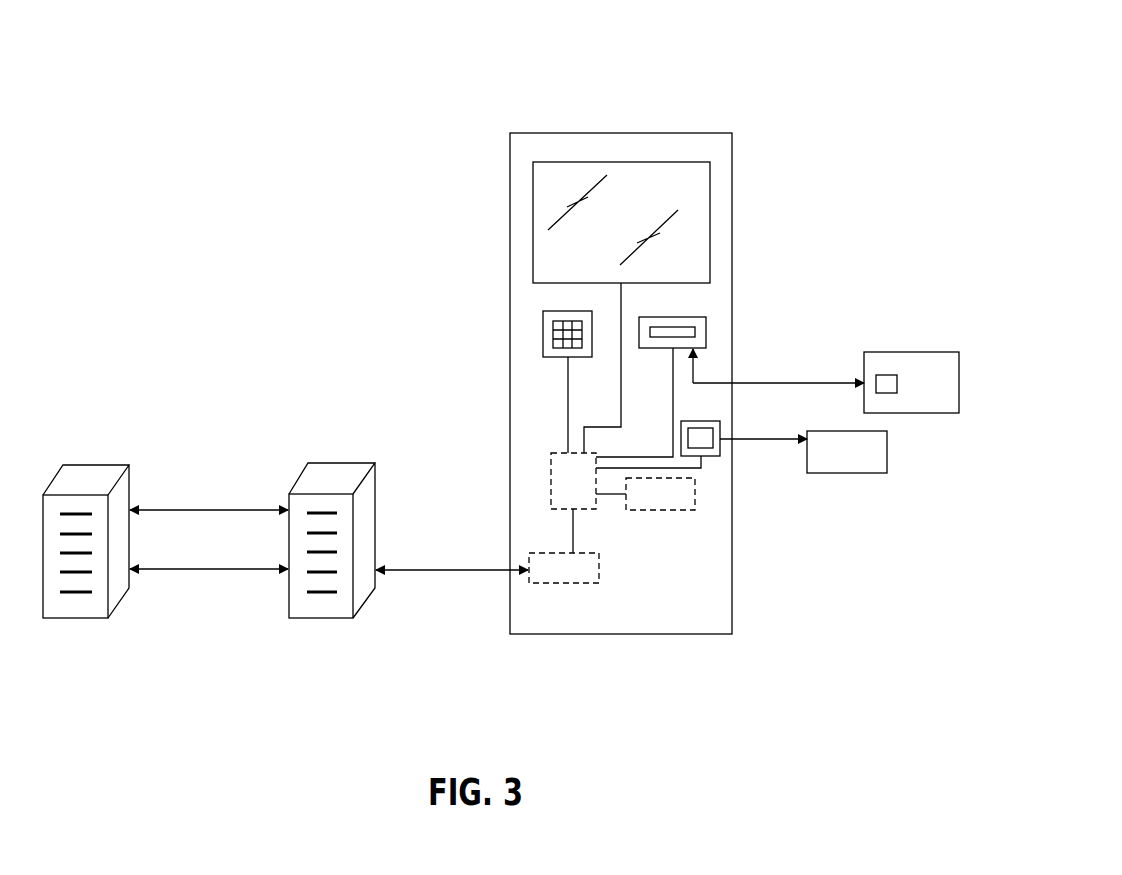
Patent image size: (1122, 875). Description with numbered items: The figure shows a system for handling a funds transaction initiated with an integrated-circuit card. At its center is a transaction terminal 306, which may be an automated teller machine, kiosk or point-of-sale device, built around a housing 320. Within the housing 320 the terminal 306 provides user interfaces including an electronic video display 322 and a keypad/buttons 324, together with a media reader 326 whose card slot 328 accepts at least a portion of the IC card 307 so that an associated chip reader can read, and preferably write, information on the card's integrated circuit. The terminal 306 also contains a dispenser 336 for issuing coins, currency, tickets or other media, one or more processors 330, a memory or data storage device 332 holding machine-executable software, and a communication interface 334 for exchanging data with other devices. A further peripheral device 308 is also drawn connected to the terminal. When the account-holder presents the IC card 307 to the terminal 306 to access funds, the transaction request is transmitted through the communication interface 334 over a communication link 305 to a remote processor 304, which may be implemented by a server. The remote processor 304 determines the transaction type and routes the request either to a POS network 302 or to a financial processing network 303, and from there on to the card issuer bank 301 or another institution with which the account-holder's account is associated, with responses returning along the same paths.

The card issuer bank 301 is at (85, 468).
The POS network 302 is at (197, 507).
The financial processing network 303 is at (200, 572).
The remote processor 304 is at (332, 470).
The communication link 305 is at (430, 567).
The terminal 306 is at (672, 363).
The IC card 307 is at (898, 352).
The peripheral device 308 is at (853, 473).
The housing 320 is at (680, 634).
The electronic video display 322 is at (698, 203).
The keypad/buttons 324 is at (553, 327).
The media reader 326 is at (697, 312).
The card slot 328 is at (695, 332).
The processor 330 is at (543, 468).
The memory or data storage device 332 is at (684, 510).
The communication interface 334 is at (550, 587).
The dispenser 336 is at (713, 457).